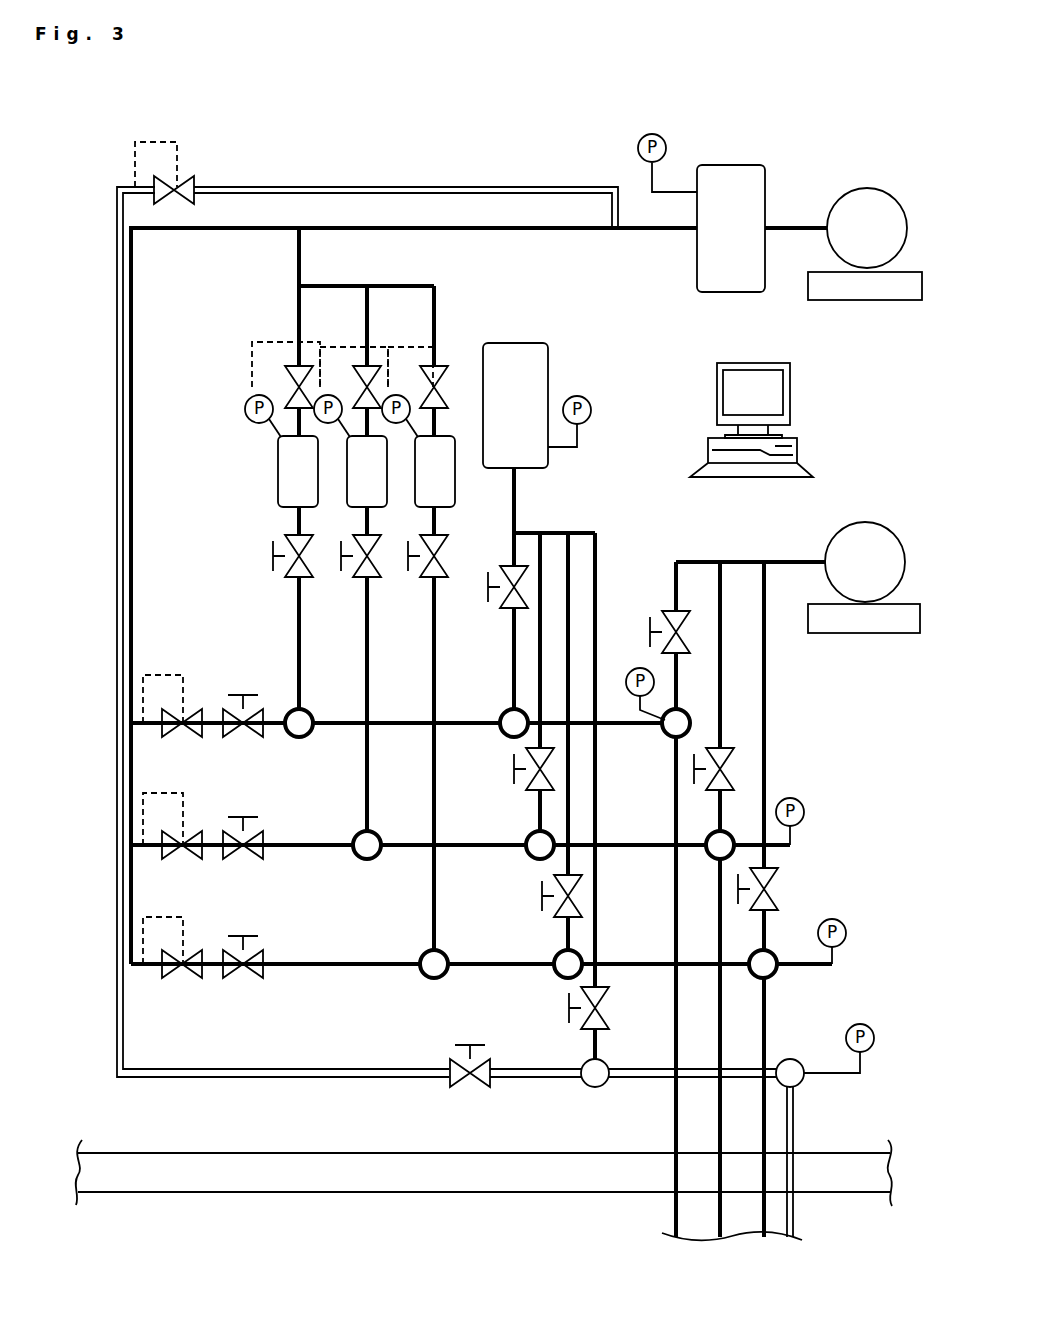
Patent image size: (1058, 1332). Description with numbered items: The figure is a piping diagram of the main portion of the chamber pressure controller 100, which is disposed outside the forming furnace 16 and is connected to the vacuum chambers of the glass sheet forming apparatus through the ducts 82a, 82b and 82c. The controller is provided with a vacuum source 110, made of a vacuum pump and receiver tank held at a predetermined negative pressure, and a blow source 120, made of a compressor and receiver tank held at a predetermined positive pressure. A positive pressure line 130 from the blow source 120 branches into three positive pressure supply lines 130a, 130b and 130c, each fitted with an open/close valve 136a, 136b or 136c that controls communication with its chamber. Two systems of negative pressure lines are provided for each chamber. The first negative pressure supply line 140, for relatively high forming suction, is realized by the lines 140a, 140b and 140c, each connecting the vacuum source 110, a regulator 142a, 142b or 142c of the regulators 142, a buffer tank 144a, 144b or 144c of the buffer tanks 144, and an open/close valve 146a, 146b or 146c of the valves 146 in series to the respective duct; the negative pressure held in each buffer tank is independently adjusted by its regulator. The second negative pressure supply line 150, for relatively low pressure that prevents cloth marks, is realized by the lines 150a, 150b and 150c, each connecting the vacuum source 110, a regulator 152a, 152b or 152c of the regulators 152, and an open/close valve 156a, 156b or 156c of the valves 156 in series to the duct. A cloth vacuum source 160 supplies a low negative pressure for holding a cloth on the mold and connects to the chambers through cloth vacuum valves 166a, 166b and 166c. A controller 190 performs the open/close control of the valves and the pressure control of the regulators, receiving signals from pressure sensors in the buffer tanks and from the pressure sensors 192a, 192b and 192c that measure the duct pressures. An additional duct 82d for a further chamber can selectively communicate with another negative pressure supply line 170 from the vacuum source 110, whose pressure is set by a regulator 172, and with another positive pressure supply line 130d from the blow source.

The chamber pressure controller 100 is at (148, 103).
The vacuum source 110 is at (774, 138).
The blow source 120 is at (538, 324).
The positive pressure line 130 is at (516, 494).
The positive pressure supply line 130a is at (514, 662).
The positive pressure supply line 130b is at (540, 694).
The positive pressure supply line 130c is at (568, 866).
The another positive pressure supply line 130d is at (597, 777).
The open/close valve 136a is at (500, 610).
The open/close valve 136b is at (527, 790).
The open/close valve 136c is at (555, 917).
The first negative pressure supply line 140 is at (301, 253).
The first negative pressure supply line 140a is at (299, 331).
The first negative pressure supply line 140b is at (367, 312).
The first negative pressure supply line 140c is at (434, 292).
The regulator 142 is at (203, 348).
The regulator 142a is at (286, 388).
The regulator 142b is at (367, 368).
The regulator 142c is at (434, 367).
The buffer tank 144 is at (203, 447).
The buffer tank 144a is at (278, 494).
The buffer tank 144b is at (347, 474).
The buffer tank 144c is at (415, 452).
The open/close valve 146 is at (203, 593).
The open/close valve 146a is at (296, 580).
The open/close valve 146b is at (363, 580).
The open/close valve 146c is at (432, 580).
The second negative pressure supply line 150 is at (134, 266).
The second negative pressure supply line 150a is at (282, 711).
The second negative pressure supply line 150b is at (297, 848).
The second negative pressure supply line 150c is at (330, 966).
The regulator 152 is at (70, 765).
The regulator 152a is at (166, 740).
The regulator 152b is at (165, 830).
The regulator 152c is at (165, 952).
The open/close valve 156 is at (323, 765).
The open/close valve 156a is at (257, 738).
The open/close valve 156b is at (260, 830).
The open/close valve 156c is at (264, 950).
The cloth vacuum source 160 is at (866, 494).
The cloth vacuum valve 166a is at (667, 610).
The cloth vacuum valve 166b is at (722, 747).
The cloth vacuum valve 166c is at (771, 910).
The another negative pressure supply line 170 is at (310, 188).
The regulator 172 is at (194, 184).
The controller 190 is at (696, 383).
The pressure sensor 192a is at (632, 671).
The pressure sensor 192b is at (800, 800).
The pressure sensor 192c is at (840, 922).
The duct 82a is at (676, 1135).
The duct 82b is at (720, 1115).
The duct 82c is at (764, 1095).
The duct 82d is at (796, 1110).
The forming furnace 16 is at (325, 1194).